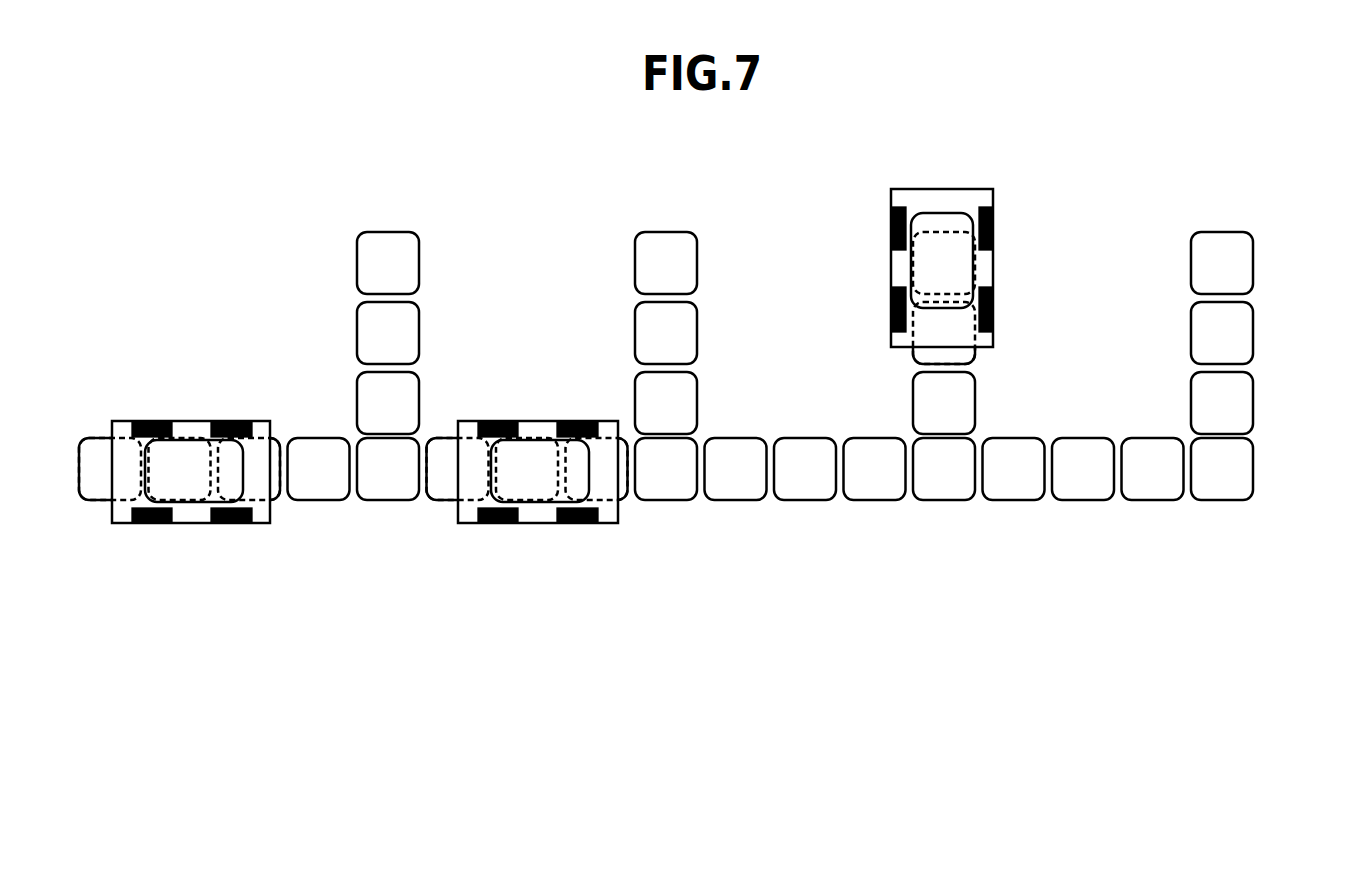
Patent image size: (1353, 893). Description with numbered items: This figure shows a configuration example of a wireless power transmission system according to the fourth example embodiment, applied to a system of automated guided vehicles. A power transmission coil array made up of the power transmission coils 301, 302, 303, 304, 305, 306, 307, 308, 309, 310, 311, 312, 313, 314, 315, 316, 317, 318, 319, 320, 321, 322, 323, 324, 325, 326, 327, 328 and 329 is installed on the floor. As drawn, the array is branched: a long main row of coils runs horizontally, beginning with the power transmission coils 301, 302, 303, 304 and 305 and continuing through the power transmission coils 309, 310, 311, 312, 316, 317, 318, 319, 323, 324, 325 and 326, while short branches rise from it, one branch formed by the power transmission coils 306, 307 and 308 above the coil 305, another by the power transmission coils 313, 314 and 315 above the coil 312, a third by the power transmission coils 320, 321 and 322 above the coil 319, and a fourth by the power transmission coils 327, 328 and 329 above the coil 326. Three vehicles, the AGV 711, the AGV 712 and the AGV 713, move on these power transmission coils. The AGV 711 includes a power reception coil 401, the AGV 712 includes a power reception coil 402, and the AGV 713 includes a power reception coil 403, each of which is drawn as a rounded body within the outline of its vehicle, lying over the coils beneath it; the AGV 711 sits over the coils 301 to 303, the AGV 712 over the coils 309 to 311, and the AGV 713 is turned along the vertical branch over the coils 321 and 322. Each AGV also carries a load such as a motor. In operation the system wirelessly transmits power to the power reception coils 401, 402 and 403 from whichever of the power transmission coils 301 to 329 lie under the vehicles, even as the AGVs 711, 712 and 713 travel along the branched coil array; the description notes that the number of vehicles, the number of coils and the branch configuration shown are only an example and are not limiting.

The power transmission coil 301 is at (93, 501).
The power transmission coil 302 is at (183, 438).
The power transmission coil 303 is at (257, 501).
The power transmission coil 304 is at (318, 501).
The power transmission coil 305 is at (388, 501).
The power transmission coil 306 is at (357, 404).
The power transmission coil 307 is at (357, 334).
The power transmission coil 308 is at (357, 264).
The power transmission coil 309 is at (442, 501).
The power transmission coil 310 is at (530, 438).
The power transmission coil 311 is at (603, 501).
The power transmission coil 312 is at (663, 501).
The power transmission coil 313 is at (698, 400).
The power transmission coil 314 is at (698, 330).
The power transmission coil 315 is at (698, 260).
The power transmission coil 316 is at (733, 501).
The power transmission coil 317 is at (802, 501).
The power transmission coil 318 is at (872, 501).
The power transmission coil 319 is at (941, 501).
The power transmission coil 320 is at (976, 400).
The power transmission coil 321 is at (976, 338).
The power transmission coil 322 is at (976, 268).
The power transmission coil 323 is at (1011, 501).
The power transmission coil 324 is at (1080, 501).
The power transmission coil 325 is at (1150, 501).
The power transmission coil 326 is at (1219, 501).
The power transmission coil 327 is at (1254, 400).
The power transmission coil 328 is at (1254, 330).
The power transmission coil 329 is at (1254, 260).
The power reception coil 401 is at (191, 503).
The power reception coil 402 is at (538, 503).
The power reception coil 403 is at (941, 213).
The AGV 711 is at (205, 421).
The AGV 712 is at (554, 421).
The AGV 713 is at (891, 272).